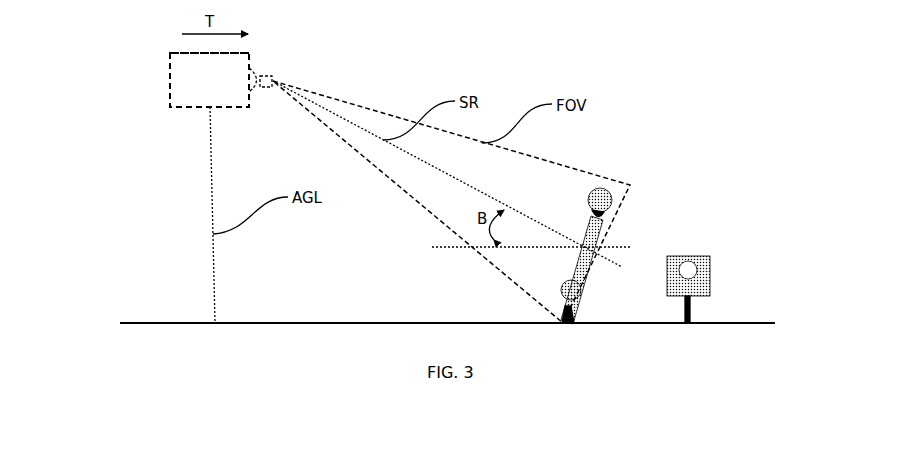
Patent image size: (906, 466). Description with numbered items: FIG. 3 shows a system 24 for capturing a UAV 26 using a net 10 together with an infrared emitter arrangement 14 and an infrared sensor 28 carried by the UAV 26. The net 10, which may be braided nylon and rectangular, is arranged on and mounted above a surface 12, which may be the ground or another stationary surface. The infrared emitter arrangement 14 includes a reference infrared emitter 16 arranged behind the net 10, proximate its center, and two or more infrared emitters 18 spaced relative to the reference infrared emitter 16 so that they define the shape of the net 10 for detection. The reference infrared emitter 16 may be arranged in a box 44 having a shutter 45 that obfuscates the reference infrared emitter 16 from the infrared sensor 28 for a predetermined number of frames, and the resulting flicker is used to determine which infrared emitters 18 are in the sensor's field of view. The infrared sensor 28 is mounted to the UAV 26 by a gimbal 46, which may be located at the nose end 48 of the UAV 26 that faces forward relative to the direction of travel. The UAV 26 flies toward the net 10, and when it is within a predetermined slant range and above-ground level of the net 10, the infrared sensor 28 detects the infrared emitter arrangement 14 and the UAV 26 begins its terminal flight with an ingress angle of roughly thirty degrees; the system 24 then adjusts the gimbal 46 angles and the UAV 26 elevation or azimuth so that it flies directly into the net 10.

The net 10 is at (584, 232).
The surface 12 is at (150, 323).
The infrared emitter arrangement 14 is at (553, 288).
The reference infrared emitter 16 is at (690, 268).
The infrared emitters 18 is at (605, 195).
The system for capturing a UAV 24 is at (198, 56).
The UAV 26 is at (203, 100).
The infrared sensor 28 is at (273, 81).
The box 44 is at (710, 287).
The shutter 45 is at (730, 258).
The gimbal 46 is at (253, 68).
The nose end 48 is at (249, 53).